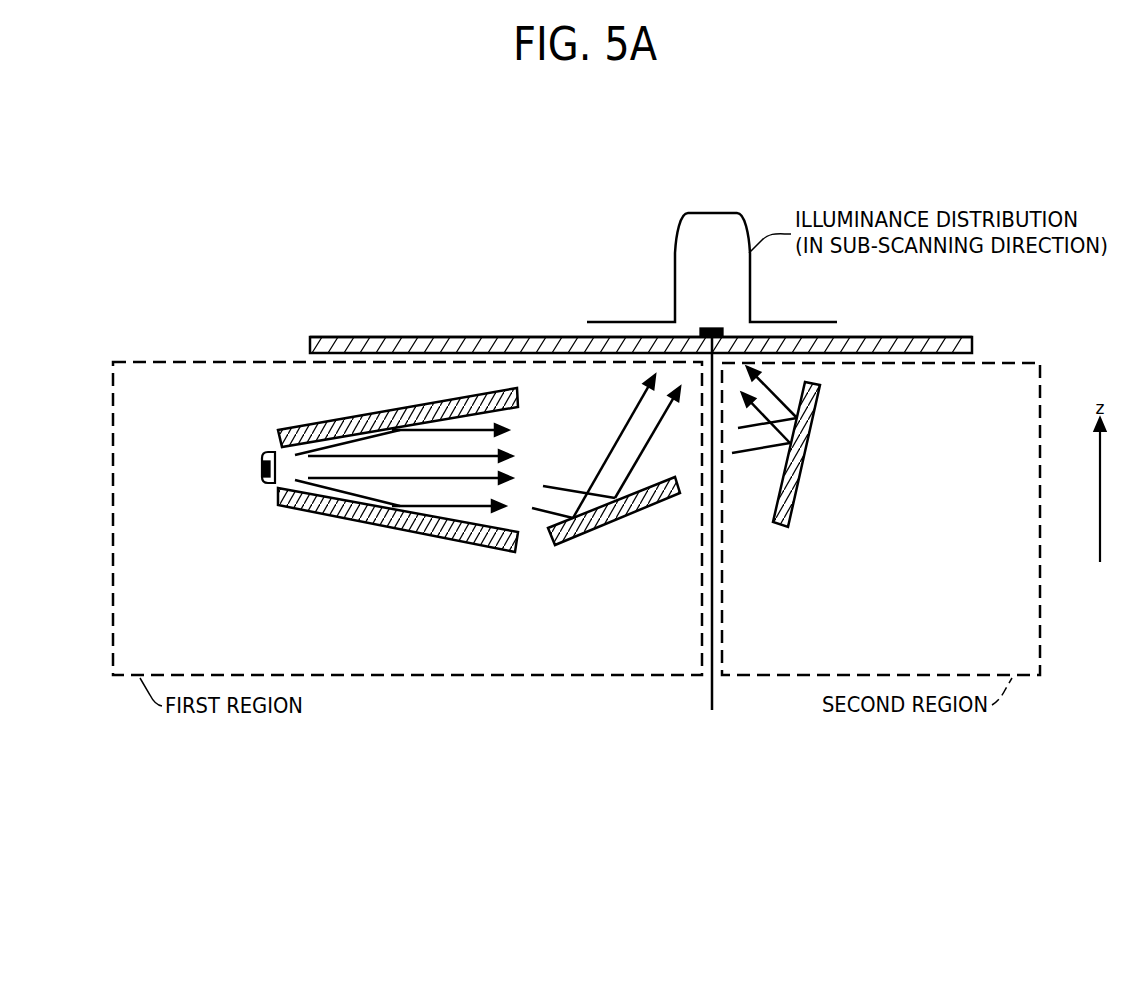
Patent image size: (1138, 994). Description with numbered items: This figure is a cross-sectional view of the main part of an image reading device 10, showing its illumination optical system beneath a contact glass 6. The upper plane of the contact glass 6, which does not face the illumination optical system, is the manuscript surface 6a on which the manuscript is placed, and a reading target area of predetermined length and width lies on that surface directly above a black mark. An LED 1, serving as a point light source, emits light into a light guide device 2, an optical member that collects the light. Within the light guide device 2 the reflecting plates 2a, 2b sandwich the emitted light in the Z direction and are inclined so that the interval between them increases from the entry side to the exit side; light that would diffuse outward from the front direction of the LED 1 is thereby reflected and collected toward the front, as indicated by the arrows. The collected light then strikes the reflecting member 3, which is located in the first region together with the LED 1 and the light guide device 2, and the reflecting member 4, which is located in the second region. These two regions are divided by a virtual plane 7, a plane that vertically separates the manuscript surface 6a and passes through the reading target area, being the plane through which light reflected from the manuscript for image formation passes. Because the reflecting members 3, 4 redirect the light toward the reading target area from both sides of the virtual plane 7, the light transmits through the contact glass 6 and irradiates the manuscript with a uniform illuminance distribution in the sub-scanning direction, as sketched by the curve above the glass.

The image reading device 10 is at (791, 178).
The contact glass 6 is at (312, 345).
The manuscript surface 6a is at (770, 292).
The light guide device 2 is at (327, 504).
The reflecting plate 2a is at (368, 416).
The reflecting plate 2b is at (397, 527).
The LED 1 is at (263, 472).
The reflecting member 3 is at (618, 525).
The reflecting member 4 is at (810, 448).
The virtual plane 7 is at (712, 695).